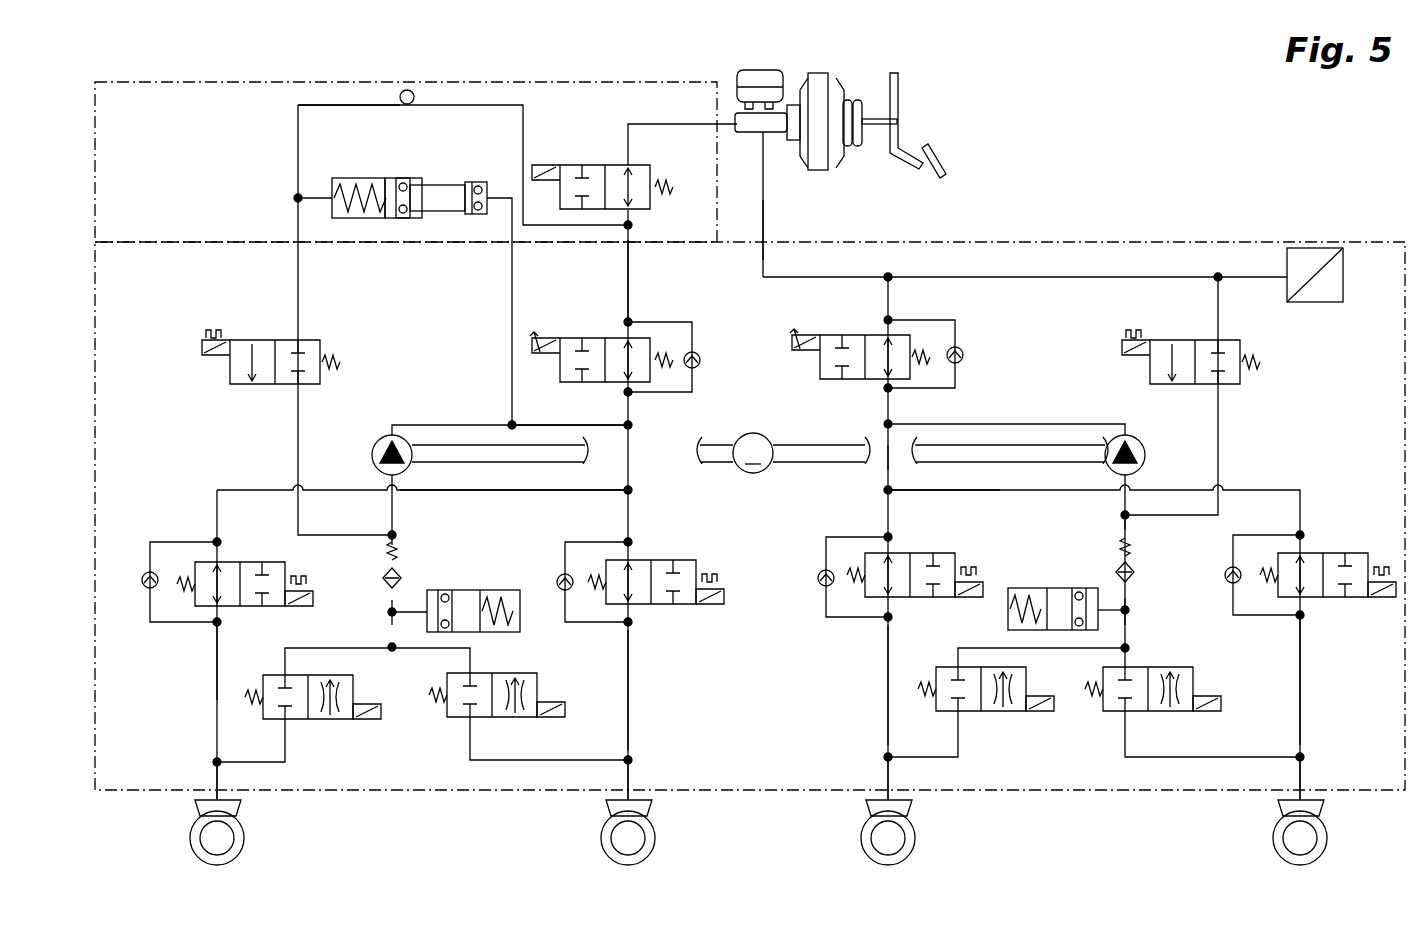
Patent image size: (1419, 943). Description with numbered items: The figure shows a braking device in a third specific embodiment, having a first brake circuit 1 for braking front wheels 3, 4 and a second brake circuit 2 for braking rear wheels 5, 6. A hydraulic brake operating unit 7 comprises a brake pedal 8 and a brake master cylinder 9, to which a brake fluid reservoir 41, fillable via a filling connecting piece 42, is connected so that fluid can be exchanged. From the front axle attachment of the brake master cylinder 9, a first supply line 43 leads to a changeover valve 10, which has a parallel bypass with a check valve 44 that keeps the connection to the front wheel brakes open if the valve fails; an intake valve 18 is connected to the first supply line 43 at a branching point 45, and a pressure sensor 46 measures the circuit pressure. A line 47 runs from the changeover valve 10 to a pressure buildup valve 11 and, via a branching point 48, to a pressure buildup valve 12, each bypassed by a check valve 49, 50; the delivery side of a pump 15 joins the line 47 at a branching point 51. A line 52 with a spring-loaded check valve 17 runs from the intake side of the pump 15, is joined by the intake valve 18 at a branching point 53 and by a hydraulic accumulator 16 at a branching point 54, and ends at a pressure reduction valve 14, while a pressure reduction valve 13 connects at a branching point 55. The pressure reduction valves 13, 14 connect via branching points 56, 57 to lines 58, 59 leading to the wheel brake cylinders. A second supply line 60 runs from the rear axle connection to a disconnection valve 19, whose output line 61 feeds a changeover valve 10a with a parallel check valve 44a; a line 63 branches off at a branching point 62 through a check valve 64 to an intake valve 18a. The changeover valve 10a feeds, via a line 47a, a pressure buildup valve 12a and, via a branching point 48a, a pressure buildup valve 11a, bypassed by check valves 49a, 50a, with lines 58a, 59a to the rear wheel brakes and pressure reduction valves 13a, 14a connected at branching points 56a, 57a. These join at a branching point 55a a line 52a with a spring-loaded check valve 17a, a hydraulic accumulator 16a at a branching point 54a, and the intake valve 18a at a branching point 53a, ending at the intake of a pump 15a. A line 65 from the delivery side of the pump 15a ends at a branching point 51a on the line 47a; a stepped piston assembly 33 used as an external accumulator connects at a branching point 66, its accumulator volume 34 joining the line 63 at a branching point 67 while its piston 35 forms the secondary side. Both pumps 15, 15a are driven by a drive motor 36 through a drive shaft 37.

The first brake circuit 1 is at (1092, 813).
The second brake circuit 2 is at (412, 816).
The front wheel 3 is at (1328, 836).
The front wheel 4 is at (916, 836).
The rear wheel 5 is at (656, 838).
The rear wheel 6 is at (245, 838).
The hydraulic brake operating unit 7 is at (841, 104).
The brake pedal 8 is at (925, 122).
The brake master cylinder 9 is at (760, 150).
The changeover valve 10 is at (840, 378).
The changeover valve 10a is at (590, 338).
The pressure buildup valve 11 is at (940, 553).
The pressure buildup valve 11a is at (250, 562).
The pressure buildup valve 12 is at (1335, 553).
The pressure buildup valve 12a is at (675, 605).
The pressure reduction valve 13 is at (982, 712).
The pressure reduction valve 13a is at (330, 720).
The pressure reduction valve 14 is at (1170, 712).
The pressure reduction valve 14a is at (525, 718).
The pump 15 is at (1145, 448).
The pump 15a is at (382, 440).
The hydraulic accumulator 16 is at (1055, 588).
The hydraulic accumulator 16a is at (498, 590).
The spring-loaded check valve 17 is at (1134, 572).
The spring-loaded check valve 17a is at (384, 578).
The intake valve 18 is at (1225, 383).
The intake valve 18a is at (290, 340).
The disconnection valve 19 is at (585, 165).
The stepped piston assembly 33 is at (400, 178).
The accumulator volume 34 is at (352, 178).
The piston 35 is at (474, 182).
The drive motor 36 is at (755, 473).
The drive shaft 37 is at (740, 468).
The brake fluid reservoir 41 is at (780, 75).
The filling connecting piece 42 is at (760, 72).
The first supply line 43 is at (770, 205).
The check valve 44 is at (963, 355).
The check valve 44a is at (700, 362).
The branching point 45 is at (1220, 278).
The pressure sensor 46 is at (1330, 302).
The line 47 is at (868, 462).
The line 47a is at (698, 450).
The branching point 48 is at (886, 490).
The branching point 48a is at (632, 490).
The check valve 49 is at (824, 595).
The check valve 49a is at (150, 600).
The check valve 50 is at (1232, 588).
The check valve 50a is at (565, 597).
The branching point 51 is at (892, 424).
The branching point 51a is at (630, 425).
The line 52 is at (1123, 525).
The line 52a is at (396, 522).
The branching point 53 is at (1122, 532).
The branching point 53a is at (398, 546).
The branching point 54 is at (1130, 612).
The branching point 54a is at (388, 612).
The branching point 55 is at (1128, 648).
The branching point 55a is at (394, 652).
The branching point 56 is at (885, 757).
The branching point 56a is at (633, 758).
The branching point 57 is at (1303, 757).
The branching point 57a is at (214, 760).
The line 58 is at (886, 692).
The line 58a is at (630, 705).
The line 59 is at (1303, 685).
The line 59a is at (219, 662).
The second supply line 60 is at (663, 124).
The line 61 is at (630, 290).
The branching point 62 is at (634, 224).
The line 63 is at (298, 110).
The check valve 64 is at (410, 102).
The line 65 is at (405, 432).
The branching point 66 is at (510, 415).
The branching point 67 is at (298, 198).